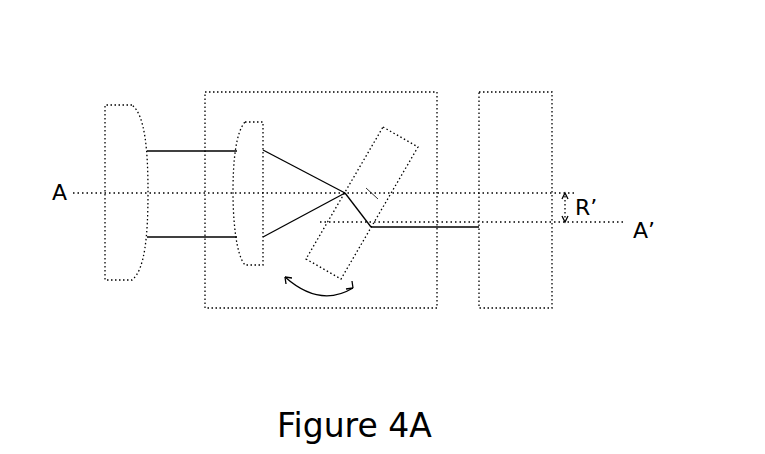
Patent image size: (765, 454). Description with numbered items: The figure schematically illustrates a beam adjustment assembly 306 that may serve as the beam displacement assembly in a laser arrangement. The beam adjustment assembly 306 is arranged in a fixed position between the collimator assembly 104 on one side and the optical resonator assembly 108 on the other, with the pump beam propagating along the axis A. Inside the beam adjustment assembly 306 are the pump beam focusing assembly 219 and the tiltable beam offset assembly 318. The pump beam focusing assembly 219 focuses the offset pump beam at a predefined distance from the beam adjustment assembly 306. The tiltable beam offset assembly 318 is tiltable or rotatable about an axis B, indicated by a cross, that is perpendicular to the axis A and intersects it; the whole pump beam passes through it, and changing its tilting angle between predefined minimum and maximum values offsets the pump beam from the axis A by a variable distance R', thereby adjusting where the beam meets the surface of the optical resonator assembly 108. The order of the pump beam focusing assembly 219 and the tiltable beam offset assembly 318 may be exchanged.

The collimator assembly 104 is at (108, 112).
The pump beam focusing assembly 219 is at (247, 127).
The beam adjustment assembly 306 is at (207, 307).
The tiltable beam offset assembly 318 is at (354, 255).
The optical resonator assembly 108 is at (493, 98).